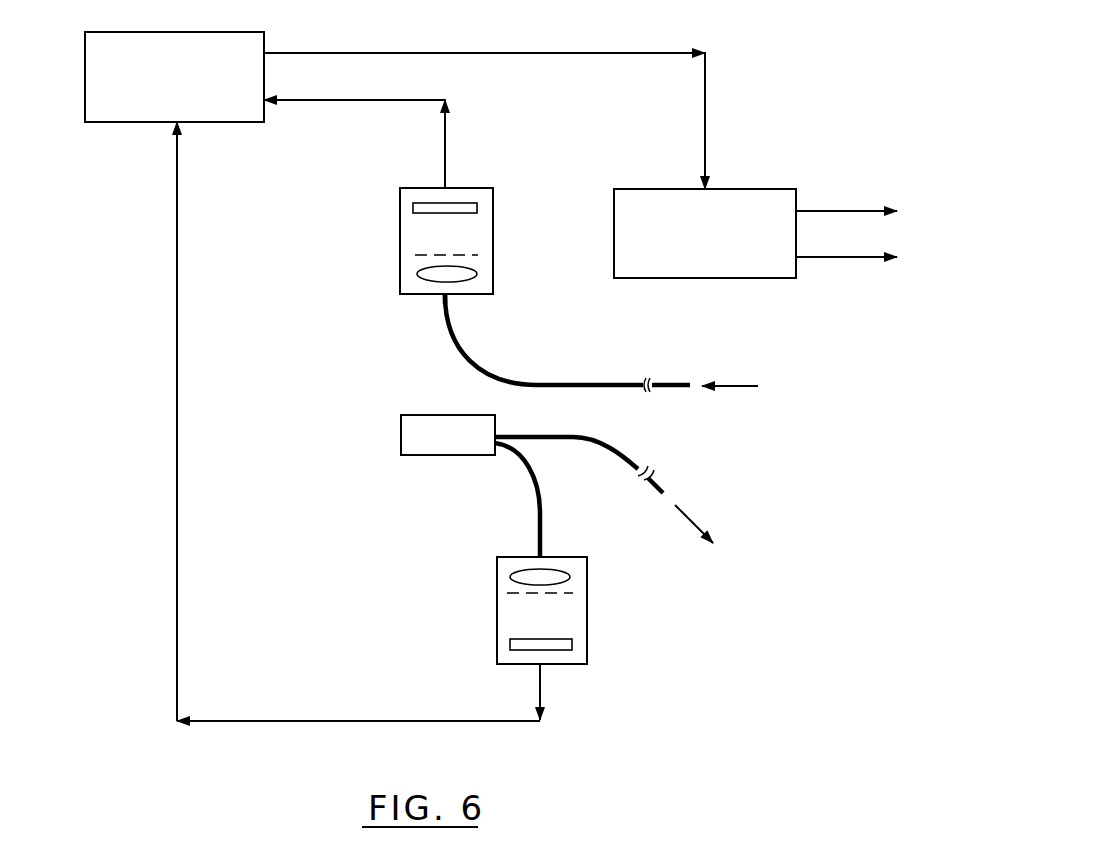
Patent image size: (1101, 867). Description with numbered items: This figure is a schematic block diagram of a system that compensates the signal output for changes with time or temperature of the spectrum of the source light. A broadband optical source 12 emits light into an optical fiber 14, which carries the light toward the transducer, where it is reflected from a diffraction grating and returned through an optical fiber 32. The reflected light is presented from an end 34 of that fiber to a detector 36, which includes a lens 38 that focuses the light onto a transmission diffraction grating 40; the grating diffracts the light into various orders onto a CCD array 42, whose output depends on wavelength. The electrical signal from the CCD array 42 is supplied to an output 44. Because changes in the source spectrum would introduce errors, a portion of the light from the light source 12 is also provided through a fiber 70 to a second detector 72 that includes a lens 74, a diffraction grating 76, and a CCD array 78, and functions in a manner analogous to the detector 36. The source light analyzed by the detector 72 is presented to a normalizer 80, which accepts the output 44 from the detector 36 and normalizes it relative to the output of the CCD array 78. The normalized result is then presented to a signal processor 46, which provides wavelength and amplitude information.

The normalizer 80 is at (119, 124).
The output 44 is at (348, 100).
The detector 36 is at (400, 230).
The CCD array 42 is at (455, 208).
The transmission diffraction grating 40 is at (482, 255).
The lens 38 is at (473, 277).
The end 34 is at (445, 295).
The optical fiber 32 is at (537, 382).
The signal processor 46 is at (708, 278).
The broadband optical source 12 is at (400, 435).
The optical fiber 14 is at (545, 435).
The fiber 70 is at (538, 515).
The detector 72 is at (497, 580).
The lens 74 is at (553, 567).
The diffraction grating 76 is at (573, 597).
The CCD array 78 is at (523, 639).